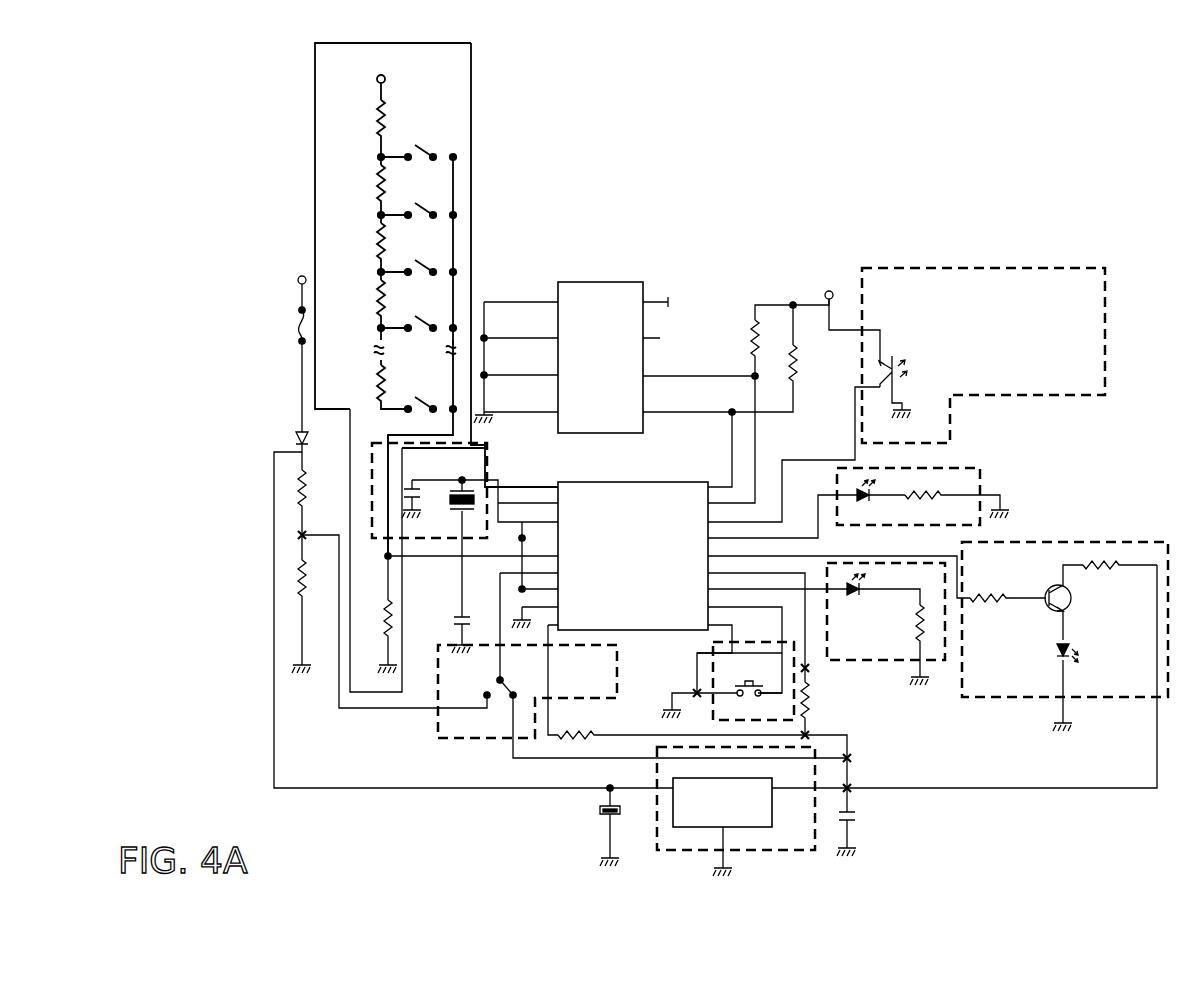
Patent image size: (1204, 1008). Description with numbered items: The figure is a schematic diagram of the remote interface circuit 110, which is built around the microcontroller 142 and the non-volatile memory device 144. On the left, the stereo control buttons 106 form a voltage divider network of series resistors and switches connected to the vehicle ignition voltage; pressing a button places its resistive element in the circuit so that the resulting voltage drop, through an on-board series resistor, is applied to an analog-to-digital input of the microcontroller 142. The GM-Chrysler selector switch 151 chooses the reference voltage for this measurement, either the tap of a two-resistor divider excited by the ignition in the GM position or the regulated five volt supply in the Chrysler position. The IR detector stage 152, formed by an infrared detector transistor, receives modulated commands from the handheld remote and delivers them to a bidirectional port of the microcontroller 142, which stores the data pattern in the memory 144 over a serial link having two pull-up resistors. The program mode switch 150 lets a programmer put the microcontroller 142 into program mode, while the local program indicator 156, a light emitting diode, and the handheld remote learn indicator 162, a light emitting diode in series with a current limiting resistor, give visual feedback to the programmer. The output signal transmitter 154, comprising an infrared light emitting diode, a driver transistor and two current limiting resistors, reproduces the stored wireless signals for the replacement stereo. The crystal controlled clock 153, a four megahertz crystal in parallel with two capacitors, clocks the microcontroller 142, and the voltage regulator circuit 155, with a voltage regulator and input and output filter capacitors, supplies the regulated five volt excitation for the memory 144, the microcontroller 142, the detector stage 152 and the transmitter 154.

The stereo control buttons 106 is at (471, 62).
The remote interface circuit 110 is at (728, 172).
The microcontroller 142 is at (631, 482).
The non-volatile memory device 144 is at (621, 282).
The program mode switch 150 is at (795, 715).
The GM-Chrysler selector switch 151 is at (440, 740).
The IR detector stage 152 is at (1040, 268).
The crystal controlled clock 153 is at (501, 449).
The output signal transmitter 154 is at (1125, 541).
The voltage regulator circuit 155 is at (760, 852).
The local program indicator 156 is at (860, 661).
The handheld remote learn indicator 162 is at (959, 468).